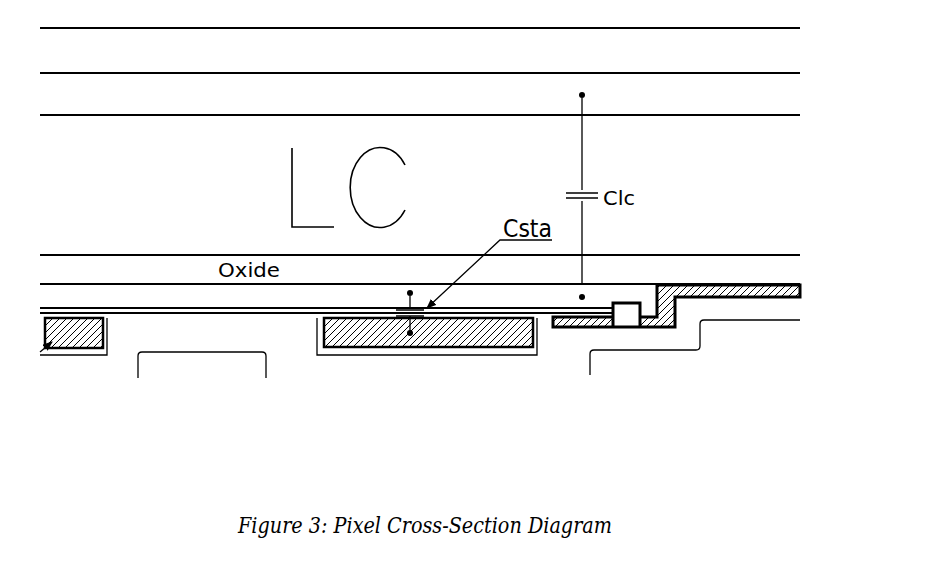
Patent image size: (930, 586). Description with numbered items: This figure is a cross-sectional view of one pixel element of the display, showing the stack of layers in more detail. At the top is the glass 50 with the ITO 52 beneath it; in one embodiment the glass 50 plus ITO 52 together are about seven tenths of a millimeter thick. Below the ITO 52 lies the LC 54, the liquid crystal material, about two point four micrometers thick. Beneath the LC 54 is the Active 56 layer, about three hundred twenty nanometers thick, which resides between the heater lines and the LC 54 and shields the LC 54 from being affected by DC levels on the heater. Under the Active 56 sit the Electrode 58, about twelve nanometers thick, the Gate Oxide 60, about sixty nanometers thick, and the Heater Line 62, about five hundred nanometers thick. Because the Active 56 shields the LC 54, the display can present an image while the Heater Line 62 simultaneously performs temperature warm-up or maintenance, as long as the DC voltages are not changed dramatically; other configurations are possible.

The glass 50 is at (420, 50).
The ITO 52 is at (420, 99).
The LC 54 is at (385, 187).
The Active 56 is at (326, 299).
The Electrode 58 is at (770, 298).
The Gate Oxide 60 is at (310, 318).
The Heater Line 62 is at (437, 345).